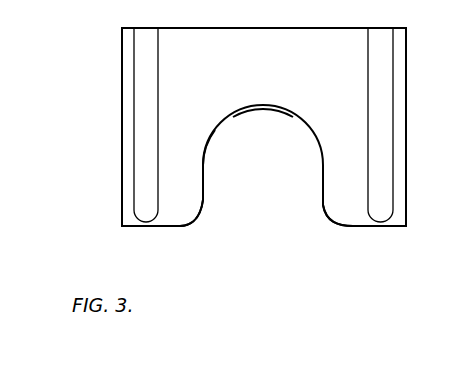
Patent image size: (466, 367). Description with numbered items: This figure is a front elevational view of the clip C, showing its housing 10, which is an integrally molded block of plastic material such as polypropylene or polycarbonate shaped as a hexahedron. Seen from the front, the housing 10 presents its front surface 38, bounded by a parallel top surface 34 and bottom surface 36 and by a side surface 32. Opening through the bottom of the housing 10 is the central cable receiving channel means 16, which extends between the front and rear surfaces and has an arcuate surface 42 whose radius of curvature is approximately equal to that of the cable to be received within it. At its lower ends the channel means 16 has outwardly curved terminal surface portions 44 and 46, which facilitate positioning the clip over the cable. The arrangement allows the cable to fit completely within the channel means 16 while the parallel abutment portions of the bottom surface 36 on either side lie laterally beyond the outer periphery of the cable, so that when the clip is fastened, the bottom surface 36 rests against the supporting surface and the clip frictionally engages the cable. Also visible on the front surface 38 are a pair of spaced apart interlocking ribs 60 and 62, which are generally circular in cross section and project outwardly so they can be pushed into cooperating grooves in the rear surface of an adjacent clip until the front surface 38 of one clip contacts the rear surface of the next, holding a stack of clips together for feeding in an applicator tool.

The housing 10 is at (117, 163).
The cable receiving channel means 16 is at (207, 148).
The side surface 32 is at (407, 117).
The top surface 34 is at (190, 30).
The bottom surface 36 is at (398, 228).
The front surface 38 is at (340, 84).
The arcuate surface 42 is at (275, 108).
The outwardly curved terminal surface portion 44 is at (194, 218).
The outwardly curved terminal surface portion 46 is at (333, 216).
The interlocking rib 60 is at (145, 68).
The interlocking rib 62 is at (380, 85).
The clip C is at (100, 85).